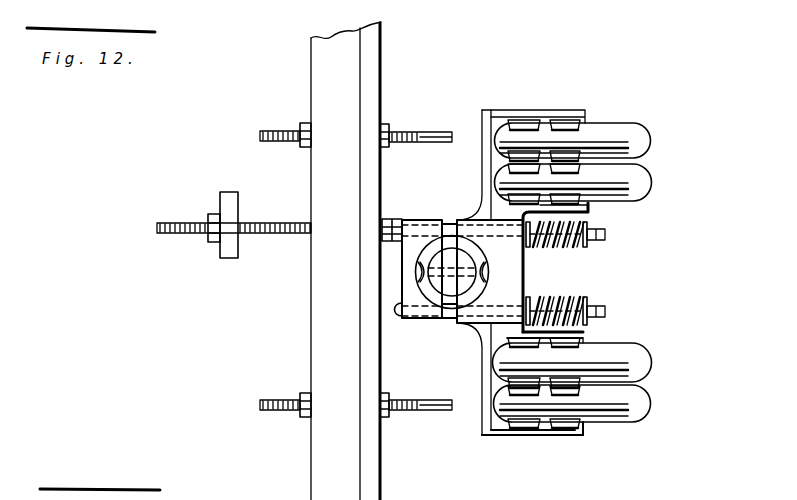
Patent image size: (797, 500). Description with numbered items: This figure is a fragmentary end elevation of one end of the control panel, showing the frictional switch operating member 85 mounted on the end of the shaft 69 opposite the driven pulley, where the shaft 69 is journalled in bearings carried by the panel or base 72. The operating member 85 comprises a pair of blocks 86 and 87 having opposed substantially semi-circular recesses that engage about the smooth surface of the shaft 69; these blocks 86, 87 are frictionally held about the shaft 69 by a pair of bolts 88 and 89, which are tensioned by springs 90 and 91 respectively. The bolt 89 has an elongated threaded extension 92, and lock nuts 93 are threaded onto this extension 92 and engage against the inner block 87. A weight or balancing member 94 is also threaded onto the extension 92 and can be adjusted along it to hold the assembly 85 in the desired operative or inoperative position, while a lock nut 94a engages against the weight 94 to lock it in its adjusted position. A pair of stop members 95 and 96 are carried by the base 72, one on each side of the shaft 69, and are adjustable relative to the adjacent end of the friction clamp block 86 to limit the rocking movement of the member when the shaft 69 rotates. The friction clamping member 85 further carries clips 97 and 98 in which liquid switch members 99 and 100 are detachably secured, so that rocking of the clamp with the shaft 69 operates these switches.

The shaft 69 is at (448, 283).
The panel or base 72 is at (377, 498).
The frictional switch operating member 85 is at (537, 281).
The block 86 is at (475, 325).
The block 87 is at (404, 325).
The bolt 88 is at (605, 315).
The bolt 89 is at (603, 231).
The spring 90 is at (573, 313).
The spring 91 is at (577, 250).
The threaded extension 92 is at (284, 234).
The lock nuts 93 is at (396, 222).
The weight or balancing member 94 is at (232, 192).
The lock nut 94a is at (215, 243).
The stop member 95 is at (433, 411).
The stop member 96 is at (439, 132).
The clip 97 is at (560, 424).
The clip 98 is at (584, 339).
The liquid switch member 99 is at (631, 406).
The liquid switch member 100 is at (633, 368).